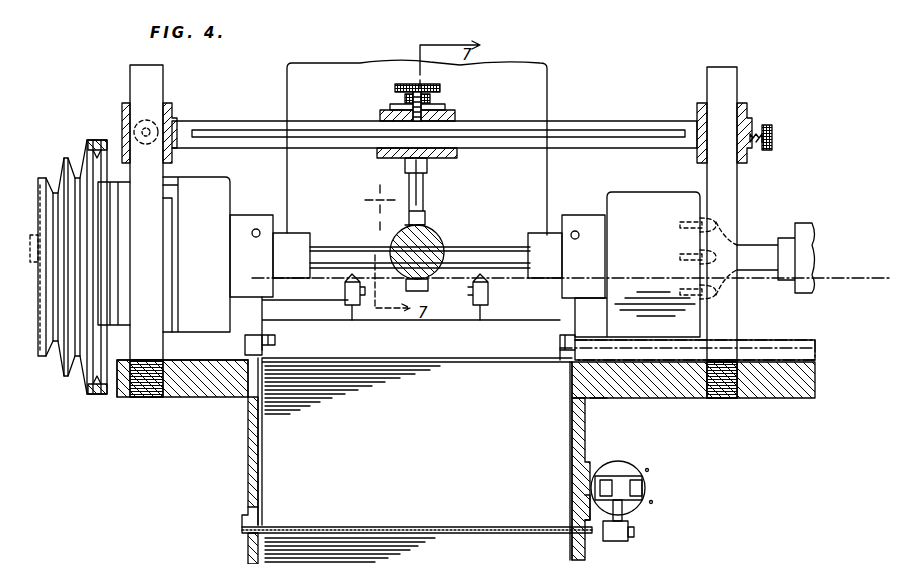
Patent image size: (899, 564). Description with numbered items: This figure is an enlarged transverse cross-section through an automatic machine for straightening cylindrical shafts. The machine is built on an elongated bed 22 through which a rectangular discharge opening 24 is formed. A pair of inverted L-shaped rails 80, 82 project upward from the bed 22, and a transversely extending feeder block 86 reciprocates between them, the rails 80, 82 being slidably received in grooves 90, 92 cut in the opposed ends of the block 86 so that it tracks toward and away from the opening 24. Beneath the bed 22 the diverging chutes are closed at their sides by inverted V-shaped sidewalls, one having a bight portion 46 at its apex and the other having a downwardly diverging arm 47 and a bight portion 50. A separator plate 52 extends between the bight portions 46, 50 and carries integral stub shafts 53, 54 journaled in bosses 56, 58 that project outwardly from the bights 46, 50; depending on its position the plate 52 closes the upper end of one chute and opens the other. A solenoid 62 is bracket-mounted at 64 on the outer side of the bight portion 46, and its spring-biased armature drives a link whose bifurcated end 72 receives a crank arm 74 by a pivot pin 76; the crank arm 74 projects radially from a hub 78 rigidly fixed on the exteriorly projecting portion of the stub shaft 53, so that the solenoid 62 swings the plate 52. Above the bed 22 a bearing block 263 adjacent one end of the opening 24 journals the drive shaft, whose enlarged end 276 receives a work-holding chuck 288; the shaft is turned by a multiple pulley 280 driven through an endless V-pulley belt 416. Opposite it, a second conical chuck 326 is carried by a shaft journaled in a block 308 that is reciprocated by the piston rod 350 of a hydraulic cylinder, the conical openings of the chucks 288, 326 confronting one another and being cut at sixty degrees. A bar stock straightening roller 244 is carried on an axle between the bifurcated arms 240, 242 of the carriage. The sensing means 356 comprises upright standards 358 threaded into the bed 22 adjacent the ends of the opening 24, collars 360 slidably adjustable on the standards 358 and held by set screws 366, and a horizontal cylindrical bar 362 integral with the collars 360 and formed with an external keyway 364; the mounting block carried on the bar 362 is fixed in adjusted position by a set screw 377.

The bed or base plate 22 is at (777, 400).
The discharge opening 24 is at (585, 408).
The bight portion 46 is at (588, 434).
The arm 47 is at (248, 556).
The bight portion 50 is at (246, 457).
The separator plate 52 is at (268, 473).
The stub shaft 53 is at (600, 540).
The stub shaft 54 is at (242, 530).
The boss 56 is at (575, 513).
The boss 58 is at (246, 513).
The solenoid 62 is at (618, 480).
The bracket 64 is at (590, 468).
The bifurcated end 72 is at (650, 468).
The crank arm 74 is at (640, 514).
The pivot pin 76 is at (652, 488).
The hub 78 is at (640, 540).
The rail 80 is at (250, 385).
The rail 82 is at (572, 385).
The feeder block 86 is at (400, 372).
The groove 90 is at (280, 340).
The groove 92 is at (560, 340).
The arm 240 is at (405, 235).
The arm 242 is at (440, 235).
The bar stock straightening roller 244 is at (425, 292).
The block 263 is at (252, 170).
The enlarged end 276 is at (244, 214).
The multiple pulley 280 is at (39, 170).
The work-holding chuck 288 is at (310, 232).
The block 308 is at (667, 185).
The second work-holding chuck 326 is at (540, 235).
The piston rod 350 is at (752, 245).
The sensing means 356 is at (510, 100).
The upright standard 358 is at (146, 65).
The collar 360 is at (167, 104).
The horizontal cylindrical bar 362 is at (598, 120).
The keyway 364 is at (636, 134).
The set screw 366 is at (770, 127).
The set screw 377 is at (440, 102).
The endless V-pulley belt 416 is at (110, 136).